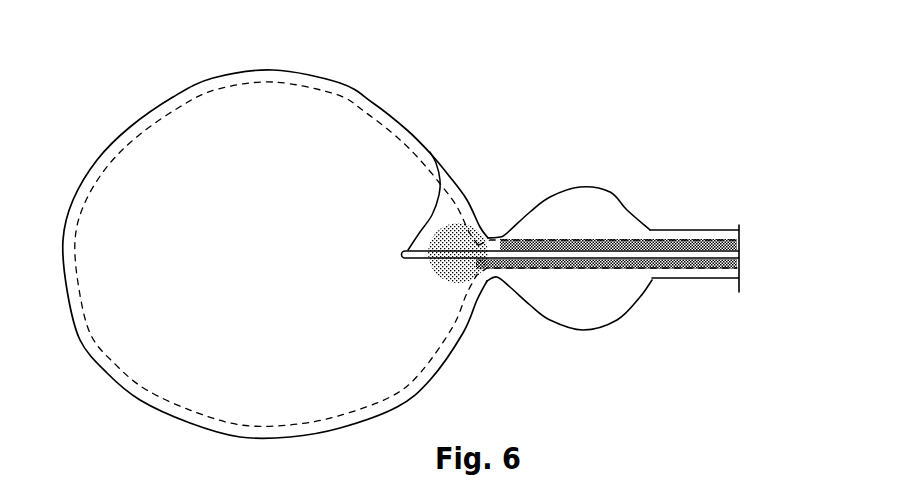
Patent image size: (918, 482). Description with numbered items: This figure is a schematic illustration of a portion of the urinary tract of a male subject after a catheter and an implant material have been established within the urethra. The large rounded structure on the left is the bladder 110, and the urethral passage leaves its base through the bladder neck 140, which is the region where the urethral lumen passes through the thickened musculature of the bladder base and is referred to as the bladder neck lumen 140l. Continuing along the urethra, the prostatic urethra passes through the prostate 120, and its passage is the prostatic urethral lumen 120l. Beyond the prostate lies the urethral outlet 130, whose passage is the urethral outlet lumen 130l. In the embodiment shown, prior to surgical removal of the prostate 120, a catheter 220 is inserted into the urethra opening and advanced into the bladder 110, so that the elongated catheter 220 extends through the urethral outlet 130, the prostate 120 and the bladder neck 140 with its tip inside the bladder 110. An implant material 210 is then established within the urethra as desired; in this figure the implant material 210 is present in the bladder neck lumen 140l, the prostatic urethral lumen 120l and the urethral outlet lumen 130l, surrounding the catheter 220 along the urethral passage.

The bladder 110 is at (183, 100).
The catheter 220 is at (432, 158).
The implant material 210 is at (457, 232).
The urethral outlet lumen 130l is at (717, 243).
The prostatic urethral lumen 120l is at (608, 245).
The bladder neck lumen 140l is at (500, 237).
The prostate 120 is at (563, 202).
The bladder neck 140 is at (488, 283).
The urethral outlet 130 is at (677, 230).